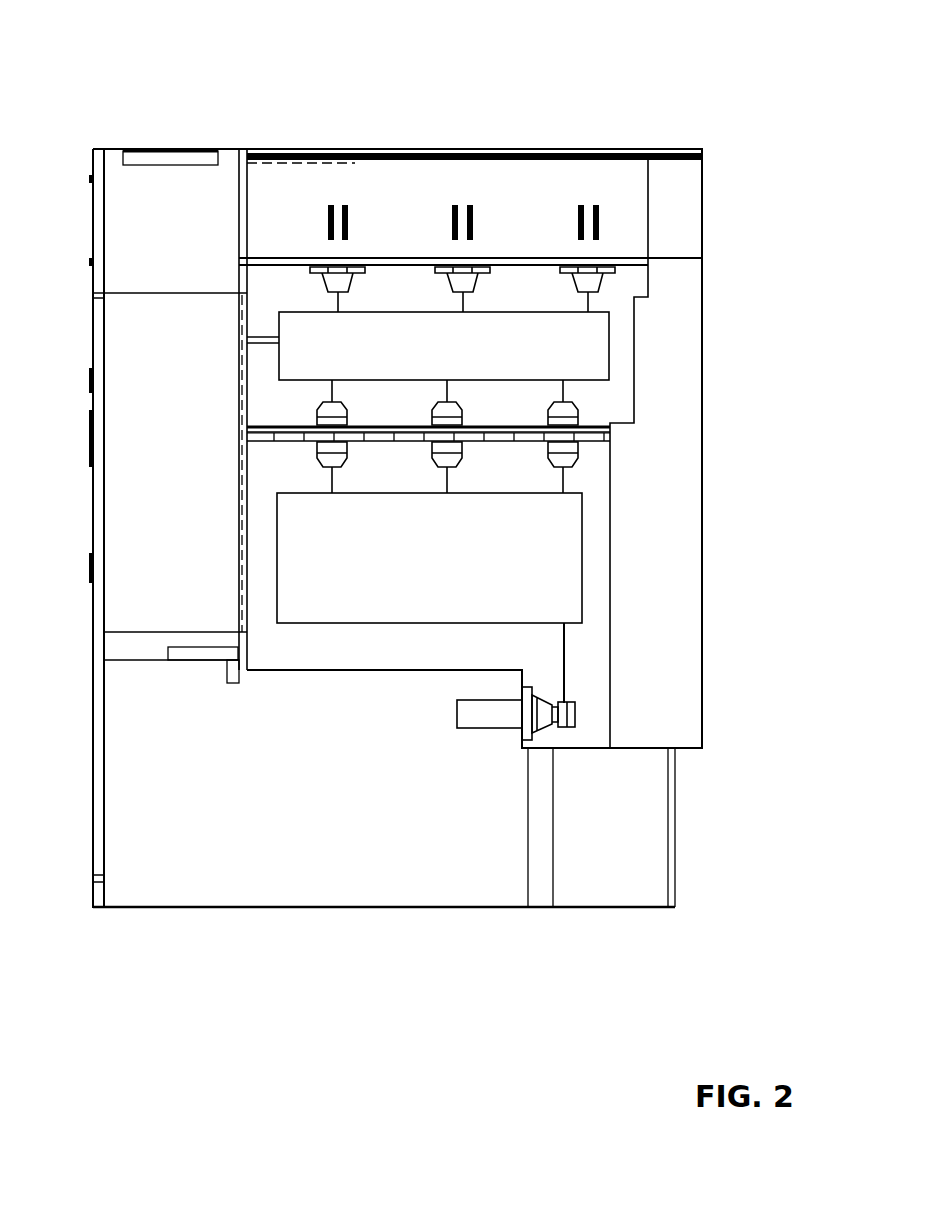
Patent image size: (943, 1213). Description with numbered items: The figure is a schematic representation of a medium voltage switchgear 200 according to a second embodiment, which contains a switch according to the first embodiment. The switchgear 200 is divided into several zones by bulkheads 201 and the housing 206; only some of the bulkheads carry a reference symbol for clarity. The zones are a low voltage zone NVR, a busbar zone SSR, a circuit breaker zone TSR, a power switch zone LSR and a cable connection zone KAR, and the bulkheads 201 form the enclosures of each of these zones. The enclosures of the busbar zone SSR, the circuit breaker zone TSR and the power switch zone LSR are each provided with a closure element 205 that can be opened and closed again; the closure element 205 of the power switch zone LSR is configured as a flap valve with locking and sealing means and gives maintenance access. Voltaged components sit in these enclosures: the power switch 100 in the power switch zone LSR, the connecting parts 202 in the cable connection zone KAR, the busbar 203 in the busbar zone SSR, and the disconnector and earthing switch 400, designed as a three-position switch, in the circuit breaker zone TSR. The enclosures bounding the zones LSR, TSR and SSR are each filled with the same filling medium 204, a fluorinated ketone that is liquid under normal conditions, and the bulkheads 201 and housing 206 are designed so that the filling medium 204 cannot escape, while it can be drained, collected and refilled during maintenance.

The medium voltage switchgear 200 is at (690, 122).
The bulkheads 201 is at (243, 212).
The connecting parts 202 is at (500, 728).
The busbar 203 is at (588, 200).
The filling medium 204 is at (597, 183).
The closure element 205 is at (280, 160).
The housing 206 is at (463, 145).
The disconnector and earthing switch 400 is at (577, 357).
The power switch 100 is at (525, 585).
The low voltage zone NVR is at (149, 195).
The busbar zone SSR is at (533, 190).
The circuit breaker zone TSR is at (621, 322).
The power switch zone LSR is at (598, 543).
The cable connection zone KAR is at (423, 838).